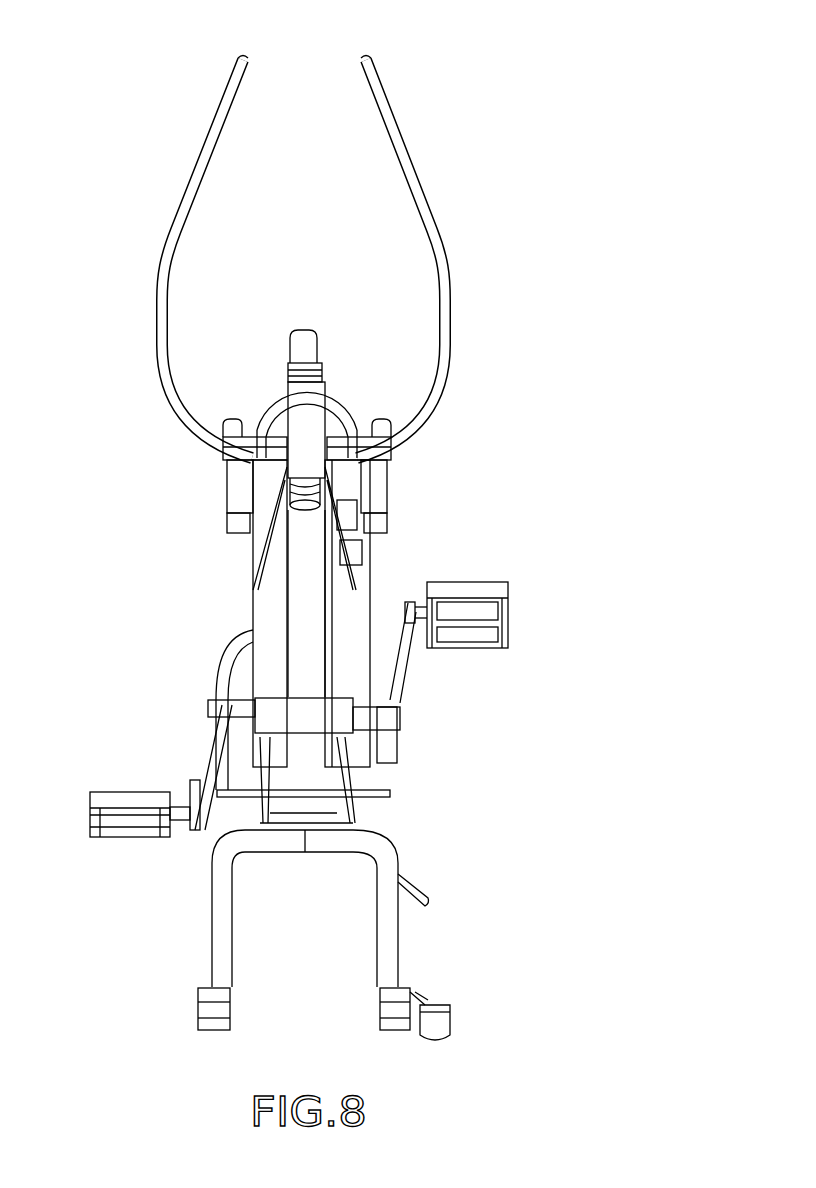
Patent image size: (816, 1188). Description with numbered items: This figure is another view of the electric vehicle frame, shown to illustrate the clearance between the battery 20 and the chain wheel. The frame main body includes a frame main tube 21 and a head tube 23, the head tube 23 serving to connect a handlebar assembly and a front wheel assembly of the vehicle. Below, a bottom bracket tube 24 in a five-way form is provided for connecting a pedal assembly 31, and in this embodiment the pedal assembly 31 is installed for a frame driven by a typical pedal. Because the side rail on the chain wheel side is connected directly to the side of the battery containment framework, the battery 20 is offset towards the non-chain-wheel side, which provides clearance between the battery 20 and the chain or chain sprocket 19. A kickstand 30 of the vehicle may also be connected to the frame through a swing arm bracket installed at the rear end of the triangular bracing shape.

The chain sprocket 19 is at (220, 663).
The battery 20 is at (267, 637).
The frame main tube 21 is at (305, 553).
The head tube 23 is at (307, 400).
The bottom bracket tube 24 is at (355, 718).
The kickstand 30 is at (210, 947).
The pedal assembly 31 is at (128, 793).